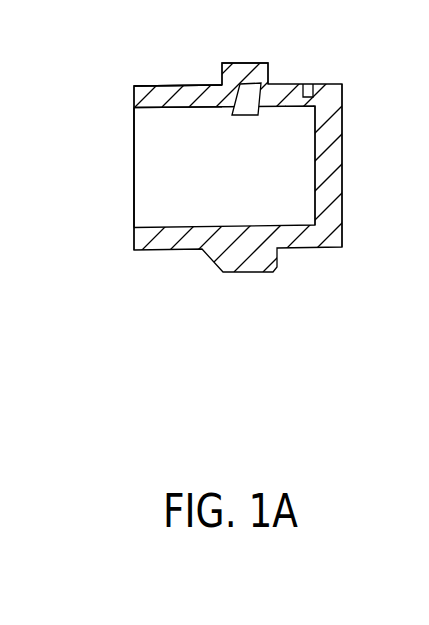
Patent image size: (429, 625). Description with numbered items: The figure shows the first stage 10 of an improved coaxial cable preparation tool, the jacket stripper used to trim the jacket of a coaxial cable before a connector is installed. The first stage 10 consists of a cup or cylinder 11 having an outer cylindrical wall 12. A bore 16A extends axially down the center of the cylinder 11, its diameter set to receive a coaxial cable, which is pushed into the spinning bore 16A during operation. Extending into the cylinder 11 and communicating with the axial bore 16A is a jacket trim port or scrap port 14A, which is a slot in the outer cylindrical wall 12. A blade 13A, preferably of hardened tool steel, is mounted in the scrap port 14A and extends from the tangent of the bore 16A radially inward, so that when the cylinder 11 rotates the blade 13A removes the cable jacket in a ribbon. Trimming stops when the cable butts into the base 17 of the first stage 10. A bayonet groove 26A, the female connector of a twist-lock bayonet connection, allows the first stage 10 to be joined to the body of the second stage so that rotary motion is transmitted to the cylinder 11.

The first stage 10 is at (240, 302).
The cylinder 11 is at (155, 86).
The outer cylindrical wall 12 is at (192, 86).
The blade 13A is at (268, 83).
The scrap port 14A is at (233, 70).
The bore 16A is at (106, 135).
The base 17 is at (343, 149).
The bayonet groove 26A is at (314, 95).